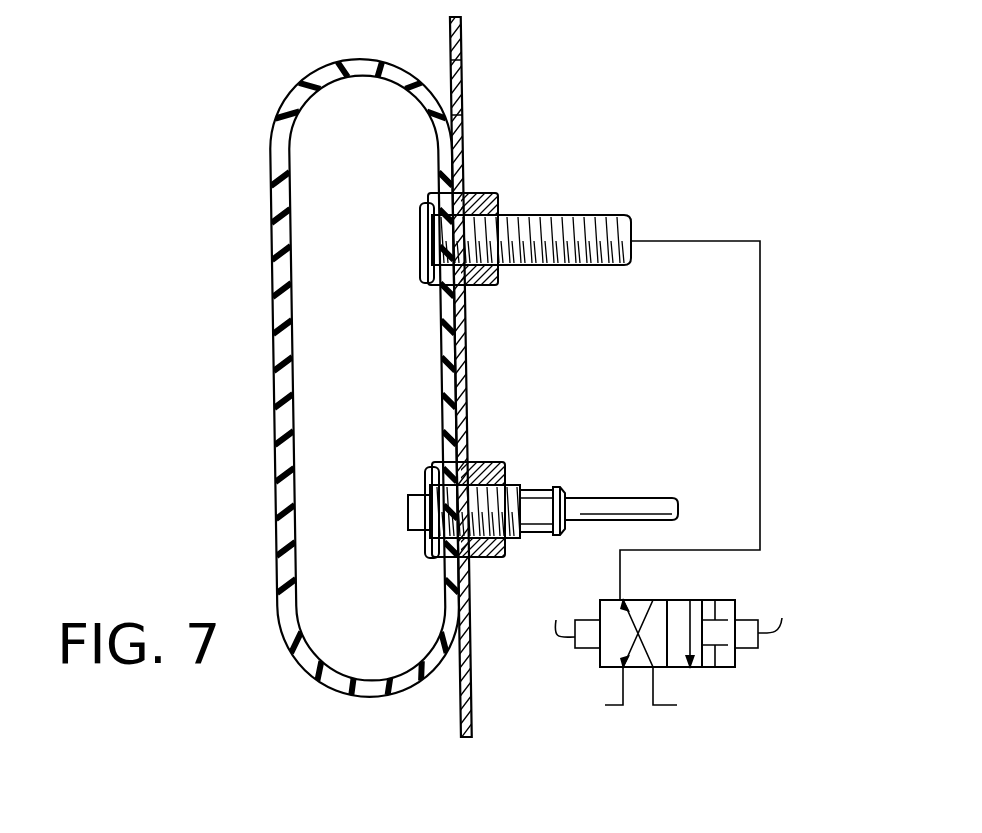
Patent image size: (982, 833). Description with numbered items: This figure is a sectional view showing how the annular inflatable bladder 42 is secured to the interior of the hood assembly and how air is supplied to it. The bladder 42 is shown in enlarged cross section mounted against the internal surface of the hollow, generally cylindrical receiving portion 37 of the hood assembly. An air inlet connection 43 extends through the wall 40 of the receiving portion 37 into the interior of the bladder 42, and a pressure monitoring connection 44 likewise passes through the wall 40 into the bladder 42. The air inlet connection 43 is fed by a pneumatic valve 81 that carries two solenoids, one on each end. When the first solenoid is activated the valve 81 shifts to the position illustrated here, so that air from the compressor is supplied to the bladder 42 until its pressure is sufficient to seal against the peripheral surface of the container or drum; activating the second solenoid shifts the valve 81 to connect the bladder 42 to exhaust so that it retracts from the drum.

The receiving portion 37 is at (458, 69).
The wall 40 is at (458, 107).
The annular inflatable bladder 42 is at (277, 118).
The air inlet connection 43 is at (508, 222).
The pressure monitoring connection 44 is at (503, 488).
The valve 81 is at (680, 598).